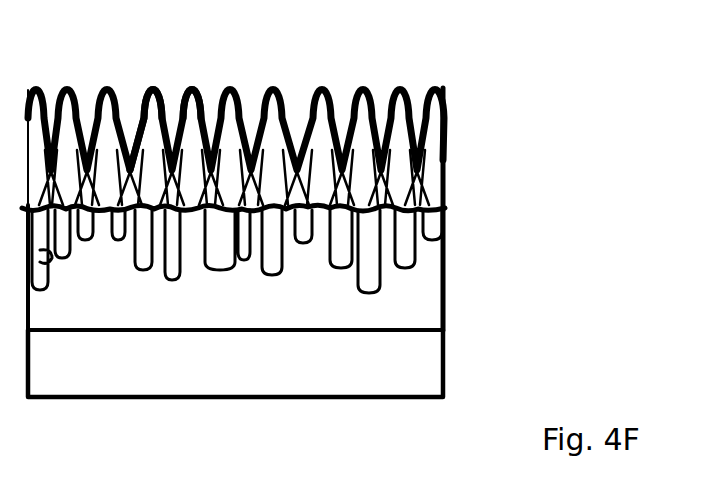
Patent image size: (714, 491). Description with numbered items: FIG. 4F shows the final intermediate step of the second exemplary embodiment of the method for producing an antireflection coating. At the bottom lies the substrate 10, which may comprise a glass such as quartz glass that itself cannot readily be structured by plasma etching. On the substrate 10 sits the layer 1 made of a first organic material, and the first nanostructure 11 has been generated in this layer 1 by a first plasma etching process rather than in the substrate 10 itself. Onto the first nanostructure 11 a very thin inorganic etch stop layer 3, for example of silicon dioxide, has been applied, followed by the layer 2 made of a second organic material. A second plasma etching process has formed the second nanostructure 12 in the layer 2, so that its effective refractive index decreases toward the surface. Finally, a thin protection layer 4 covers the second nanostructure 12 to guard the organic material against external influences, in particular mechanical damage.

The layer made of a first organic material 1 is at (410, 307).
The layer made of a second organic material 2 is at (415, 137).
The etch stop layer 3 is at (318, 120).
The protection layer 4 is at (192, 85).
The substrate 10 is at (408, 357).
The first nanostructure 11 is at (443, 210).
The second nanostructure 12 is at (138, 128).